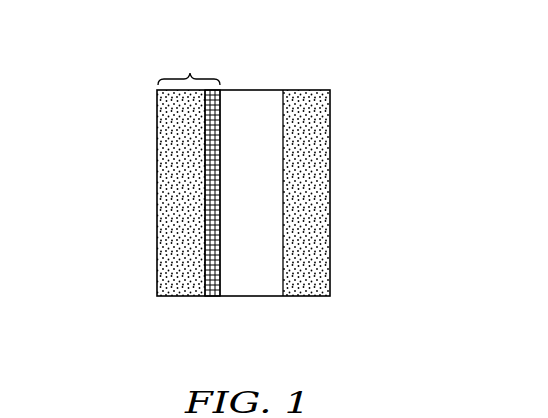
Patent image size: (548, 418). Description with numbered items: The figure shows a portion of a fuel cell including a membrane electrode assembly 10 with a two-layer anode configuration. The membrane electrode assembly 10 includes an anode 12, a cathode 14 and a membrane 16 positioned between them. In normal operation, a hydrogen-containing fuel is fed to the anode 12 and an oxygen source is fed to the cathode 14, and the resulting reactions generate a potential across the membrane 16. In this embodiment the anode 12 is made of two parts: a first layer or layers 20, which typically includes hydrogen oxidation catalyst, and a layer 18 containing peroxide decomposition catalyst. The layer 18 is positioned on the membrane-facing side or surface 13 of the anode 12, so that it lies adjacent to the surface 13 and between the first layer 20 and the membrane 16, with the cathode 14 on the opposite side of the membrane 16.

The membrane electrode assembly 10 is at (370, 104).
The anode 12 is at (157, 130).
The membrane-facing surface of anode 13 is at (206, 108).
The cathode 14 is at (322, 249).
The membrane 16 is at (268, 290).
The peroxide decomposition catalyst layer 18 is at (222, 96).
The first layer of anode 20 is at (170, 258).